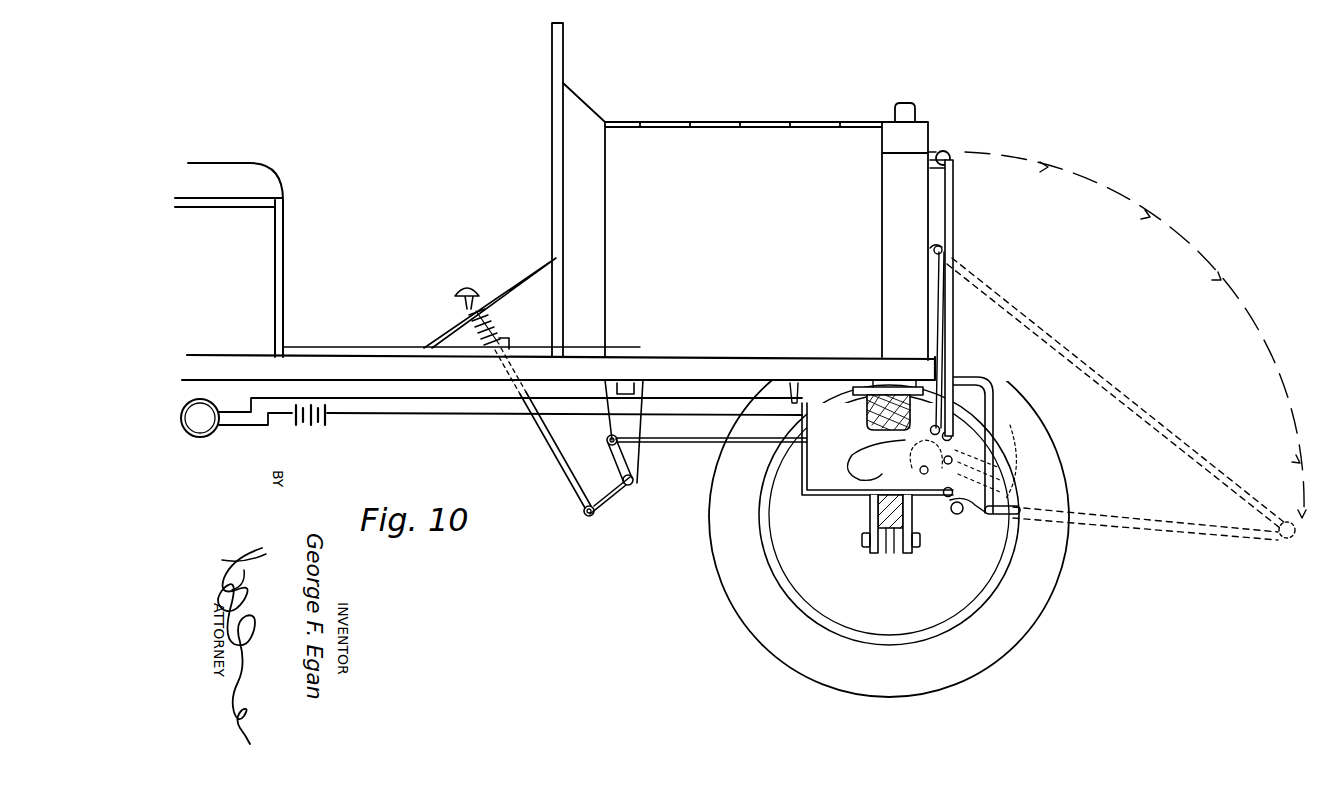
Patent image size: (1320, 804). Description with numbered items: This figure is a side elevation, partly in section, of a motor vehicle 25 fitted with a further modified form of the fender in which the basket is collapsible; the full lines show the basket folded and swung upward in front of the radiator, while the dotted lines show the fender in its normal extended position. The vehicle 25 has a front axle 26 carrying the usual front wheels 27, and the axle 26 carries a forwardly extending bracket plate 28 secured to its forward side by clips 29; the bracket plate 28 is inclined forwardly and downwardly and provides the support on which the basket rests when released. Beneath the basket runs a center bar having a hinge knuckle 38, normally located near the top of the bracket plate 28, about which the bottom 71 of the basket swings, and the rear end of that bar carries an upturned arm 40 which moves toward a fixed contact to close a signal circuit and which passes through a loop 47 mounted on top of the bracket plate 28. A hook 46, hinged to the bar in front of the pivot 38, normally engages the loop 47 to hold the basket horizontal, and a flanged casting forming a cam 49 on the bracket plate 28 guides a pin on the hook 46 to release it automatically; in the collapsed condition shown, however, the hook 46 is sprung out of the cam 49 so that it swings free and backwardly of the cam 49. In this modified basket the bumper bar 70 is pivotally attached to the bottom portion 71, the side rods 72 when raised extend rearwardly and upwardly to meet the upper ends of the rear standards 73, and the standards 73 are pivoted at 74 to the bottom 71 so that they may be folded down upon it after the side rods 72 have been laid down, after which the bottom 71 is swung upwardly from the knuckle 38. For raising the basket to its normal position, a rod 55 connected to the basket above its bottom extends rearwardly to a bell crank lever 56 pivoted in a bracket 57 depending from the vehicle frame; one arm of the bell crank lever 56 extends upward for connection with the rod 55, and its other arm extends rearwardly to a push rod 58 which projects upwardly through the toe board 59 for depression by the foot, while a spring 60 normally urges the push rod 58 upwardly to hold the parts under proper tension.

The vehicle 25 is at (752, 137).
The front axle 26 is at (892, 546).
The front wheels 27 is at (712, 530).
The bracket plate 28 is at (992, 516).
The clips 29 is at (878, 523).
The hinge knuckle 38 is at (958, 516).
The upturned arm 40 is at (812, 463).
The hook 46 is at (1020, 458).
The loop 47 is at (920, 472).
The cam 49 is at (962, 447).
The rod 55 is at (777, 447).
The bell crank lever 56 is at (630, 488).
The bracket 57 is at (610, 430).
The push rod 58 is at (560, 467).
The toe board 59 is at (473, 303).
The spring 60 is at (501, 332).
The bumper bar 70 is at (950, 162).
The bottom portion of the basket 71 is at (953, 337).
The side rods 72 is at (953, 190).
The rear standards 73 is at (940, 283).
The pivot 74 is at (990, 440).